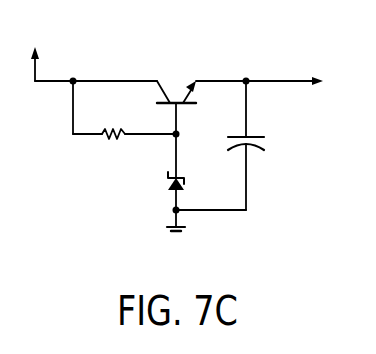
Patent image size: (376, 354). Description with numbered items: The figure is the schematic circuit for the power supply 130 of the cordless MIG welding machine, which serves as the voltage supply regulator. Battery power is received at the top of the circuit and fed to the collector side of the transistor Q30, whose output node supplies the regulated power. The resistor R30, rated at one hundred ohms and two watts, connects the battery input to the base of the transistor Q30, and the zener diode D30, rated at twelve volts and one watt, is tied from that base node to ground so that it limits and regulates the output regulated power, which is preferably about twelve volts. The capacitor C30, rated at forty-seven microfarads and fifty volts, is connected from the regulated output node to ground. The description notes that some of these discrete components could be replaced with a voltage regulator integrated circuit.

The power supply 130 is at (83, 206).
The resistor R30 is at (113, 147).
The transistor Q30 is at (182, 94).
The zener diode D30 is at (161, 172).
The capacitor C30 is at (259, 145).